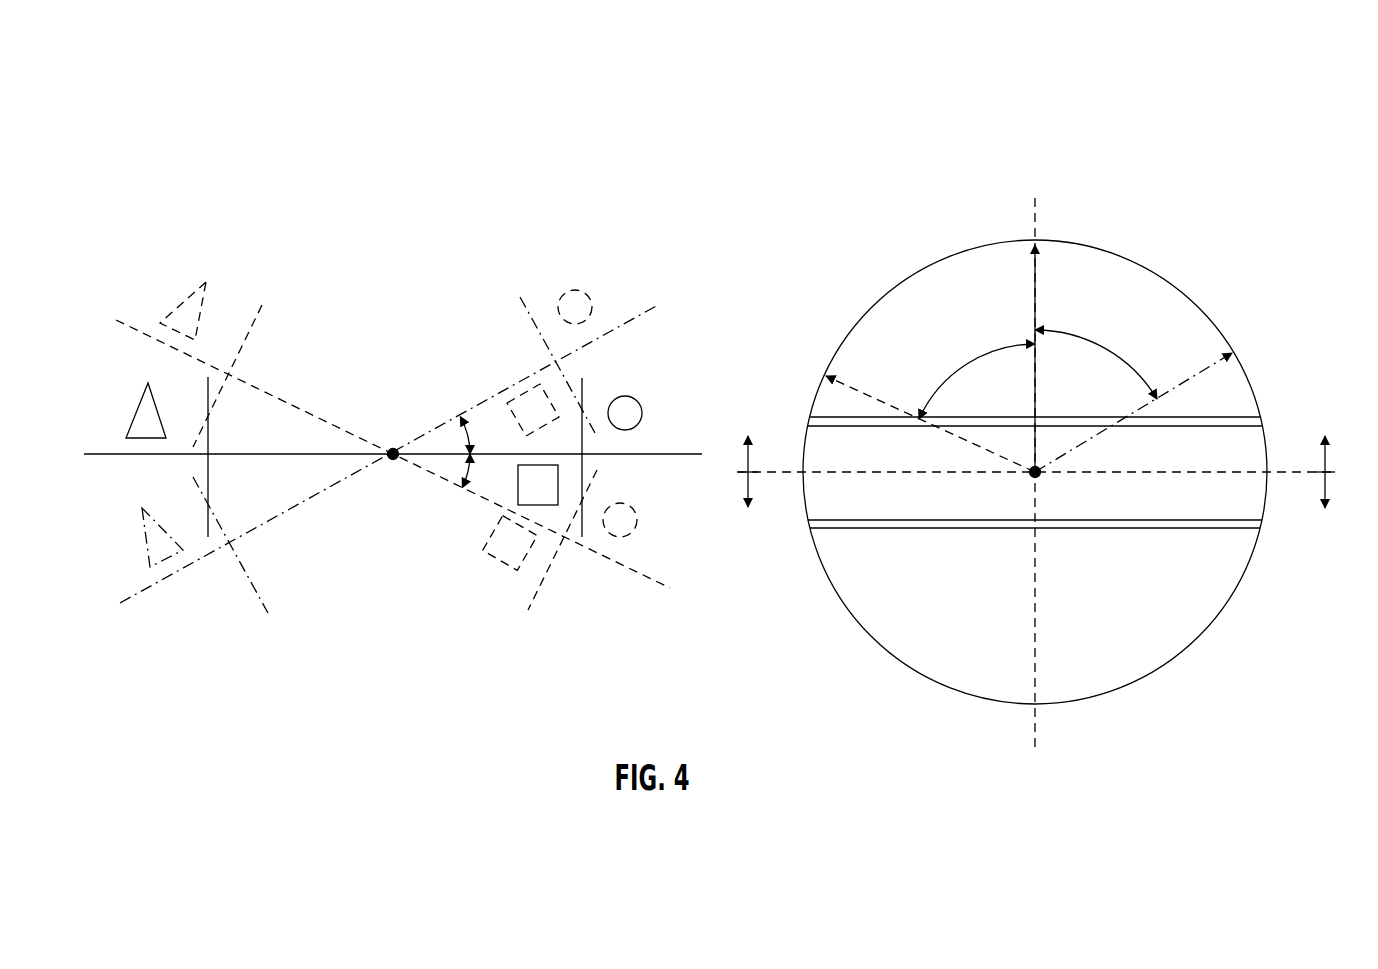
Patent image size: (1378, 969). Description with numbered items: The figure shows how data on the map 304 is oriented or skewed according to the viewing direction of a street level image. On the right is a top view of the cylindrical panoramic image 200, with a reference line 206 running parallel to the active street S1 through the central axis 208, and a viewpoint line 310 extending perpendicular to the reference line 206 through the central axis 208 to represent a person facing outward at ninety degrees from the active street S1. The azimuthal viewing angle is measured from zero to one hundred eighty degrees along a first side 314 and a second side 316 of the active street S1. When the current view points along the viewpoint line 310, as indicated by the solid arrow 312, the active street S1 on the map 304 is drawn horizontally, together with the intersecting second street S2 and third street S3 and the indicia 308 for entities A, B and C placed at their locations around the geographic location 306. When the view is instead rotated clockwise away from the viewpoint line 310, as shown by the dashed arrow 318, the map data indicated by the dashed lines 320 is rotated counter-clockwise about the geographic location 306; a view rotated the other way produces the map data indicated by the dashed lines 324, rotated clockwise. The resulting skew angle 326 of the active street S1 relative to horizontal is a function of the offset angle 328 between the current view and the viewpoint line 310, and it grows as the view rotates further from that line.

The map 304 is at (302, 208).
The geographic location 306 is at (393, 460).
The indicia 308 is at (137, 400).
The dashed lines 320 is at (641, 315).
The dashed lines 324 is at (638, 590).
The skew angle 326 is at (464, 420).
The active street S1 is at (114, 457).
The second street S2 is at (207, 388).
The third street S3 is at (583, 392).
The panoramic image 200 is at (1170, 276).
The reference line 206 is at (848, 475).
The central axis 208 is at (1030, 478).
The viewpoint line 310 is at (1038, 680).
The solid arrow 312 is at (1033, 275).
The first side 314 is at (748, 445).
The second side 316 is at (748, 497).
The dashed arrow 318 is at (1213, 350).
The offset angle 328 is at (946, 378).